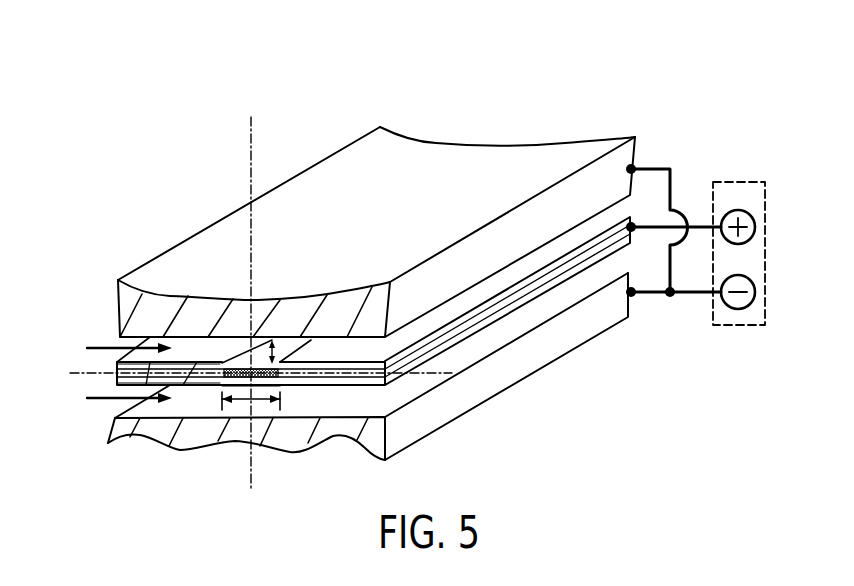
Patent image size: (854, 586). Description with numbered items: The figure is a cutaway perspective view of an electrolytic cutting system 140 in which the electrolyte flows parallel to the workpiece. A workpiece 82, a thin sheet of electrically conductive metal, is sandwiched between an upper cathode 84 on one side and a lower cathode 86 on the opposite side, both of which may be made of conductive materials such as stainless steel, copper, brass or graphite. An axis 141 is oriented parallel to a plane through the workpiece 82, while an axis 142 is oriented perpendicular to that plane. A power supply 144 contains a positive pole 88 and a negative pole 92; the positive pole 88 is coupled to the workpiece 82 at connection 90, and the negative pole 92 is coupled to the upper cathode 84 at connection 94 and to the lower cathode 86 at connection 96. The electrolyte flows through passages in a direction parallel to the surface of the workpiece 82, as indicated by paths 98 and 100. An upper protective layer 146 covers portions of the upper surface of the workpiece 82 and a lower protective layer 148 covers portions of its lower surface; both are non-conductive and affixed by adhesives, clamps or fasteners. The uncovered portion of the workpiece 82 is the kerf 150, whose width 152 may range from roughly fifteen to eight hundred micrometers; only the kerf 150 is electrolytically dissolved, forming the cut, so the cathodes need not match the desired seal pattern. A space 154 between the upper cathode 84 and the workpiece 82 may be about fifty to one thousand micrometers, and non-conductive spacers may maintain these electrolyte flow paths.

The electrolytic cutting system 140 is at (590, 64).
The upper cathode 84 is at (473, 150).
The lower cathode 86 is at (438, 410).
The workpiece 82 is at (493, 308).
The axis 141 is at (427, 365).
The axis 142 is at (250, 140).
The power supply 144 is at (740, 181).
The positive pole 88 is at (752, 213).
The negative pole 92 is at (752, 277).
The connection 94 is at (636, 164).
The connection 90 is at (635, 216).
The connection 96 is at (636, 302).
The path 98 is at (107, 345).
The path 100 is at (107, 403).
The upper protective layer 146 is at (115, 363).
The lower protective layer 148 is at (115, 382).
The kerf 150 is at (237, 385).
The width 152 is at (260, 400).
The space 154 is at (274, 342).